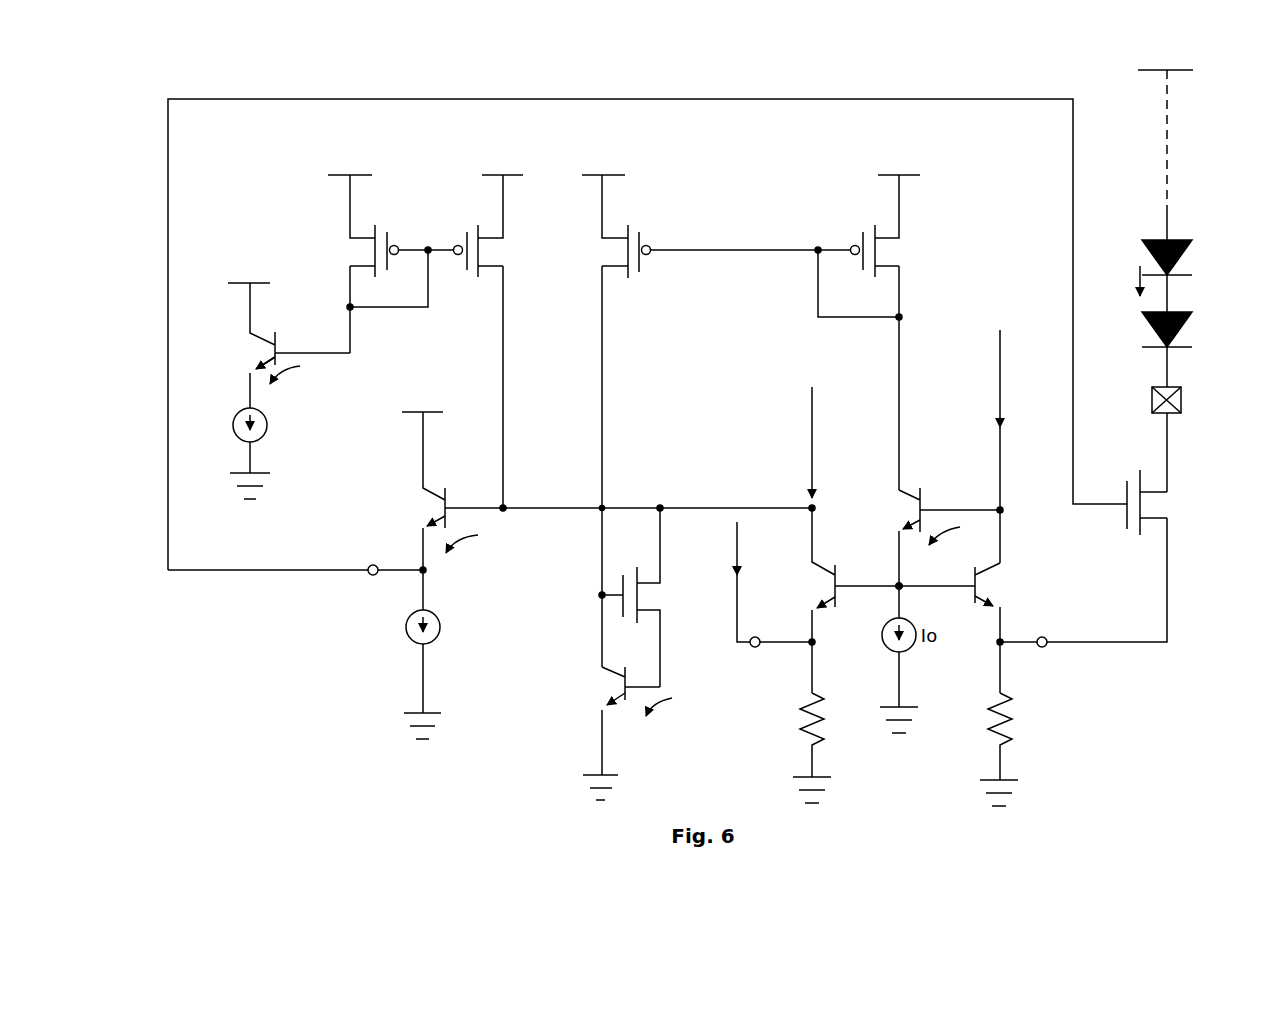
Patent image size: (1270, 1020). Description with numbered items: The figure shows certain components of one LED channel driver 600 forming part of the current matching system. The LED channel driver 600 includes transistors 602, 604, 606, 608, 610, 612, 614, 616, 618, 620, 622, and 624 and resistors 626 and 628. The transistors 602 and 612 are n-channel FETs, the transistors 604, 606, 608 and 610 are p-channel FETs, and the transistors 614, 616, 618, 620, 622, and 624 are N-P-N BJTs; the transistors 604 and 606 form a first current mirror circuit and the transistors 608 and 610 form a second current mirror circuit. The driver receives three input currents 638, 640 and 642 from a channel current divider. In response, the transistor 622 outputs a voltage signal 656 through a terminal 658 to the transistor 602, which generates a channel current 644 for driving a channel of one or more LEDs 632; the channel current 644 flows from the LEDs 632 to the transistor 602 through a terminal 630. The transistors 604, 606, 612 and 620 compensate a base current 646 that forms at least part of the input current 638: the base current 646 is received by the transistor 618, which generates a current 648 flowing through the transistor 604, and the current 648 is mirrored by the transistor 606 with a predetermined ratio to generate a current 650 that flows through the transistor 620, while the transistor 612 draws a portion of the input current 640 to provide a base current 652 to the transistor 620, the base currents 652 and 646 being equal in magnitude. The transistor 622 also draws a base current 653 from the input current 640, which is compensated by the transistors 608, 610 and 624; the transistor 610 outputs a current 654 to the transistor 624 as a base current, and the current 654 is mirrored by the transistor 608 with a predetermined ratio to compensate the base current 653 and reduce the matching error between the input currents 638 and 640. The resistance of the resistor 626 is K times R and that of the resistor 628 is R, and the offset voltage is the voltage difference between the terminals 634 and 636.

The LED channel driver 600 is at (214, 688).
The transistor 602 is at (1143, 527).
The transistor 604 is at (895, 248).
The transistor 606 is at (640, 273).
The transistor 608 is at (493, 253).
The transistor 610 is at (386, 224).
The transistor 612 is at (604, 596).
The transistor 614 is at (837, 598).
The transistor 616 is at (978, 602).
The transistor 618 is at (910, 493).
The transistor 620 is at (613, 708).
The transistor 622 is at (449, 497).
The transistor 624 is at (278, 333).
The resistor 626 is at (818, 737).
The resistor 628 is at (987, 720).
The terminal 630 is at (1182, 393).
The LEDs 632 is at (1195, 249).
The terminal 634 is at (753, 647).
The terminal 636 is at (1045, 646).
The input current 638 is at (1000, 417).
The input current 640 is at (812, 432).
The input current 642 is at (734, 568).
The channel current 644 is at (1167, 465).
The base current 646 is at (970, 513).
The current 648 is at (899, 370).
The current 650 is at (603, 442).
The base current 652 is at (660, 662).
The base current 653 is at (482, 512).
The current 654 is at (322, 357).
The voltage signal 656 is at (403, 573).
The terminal 658 is at (365, 575).